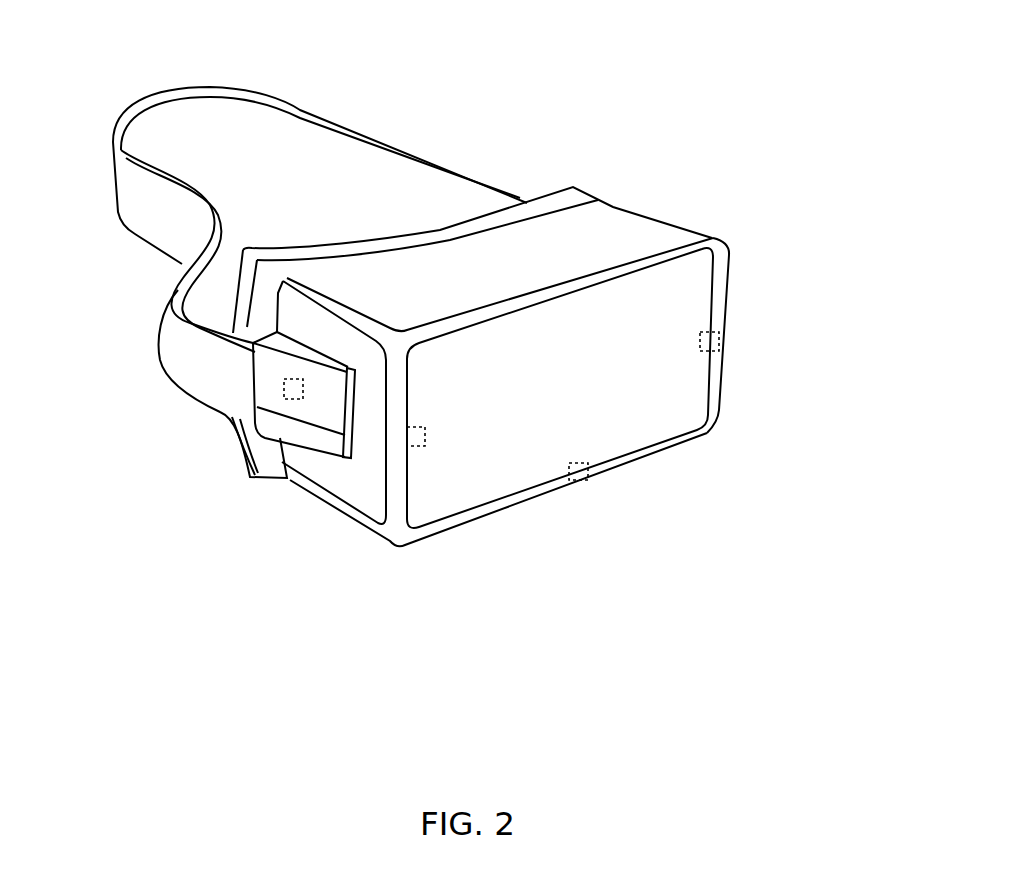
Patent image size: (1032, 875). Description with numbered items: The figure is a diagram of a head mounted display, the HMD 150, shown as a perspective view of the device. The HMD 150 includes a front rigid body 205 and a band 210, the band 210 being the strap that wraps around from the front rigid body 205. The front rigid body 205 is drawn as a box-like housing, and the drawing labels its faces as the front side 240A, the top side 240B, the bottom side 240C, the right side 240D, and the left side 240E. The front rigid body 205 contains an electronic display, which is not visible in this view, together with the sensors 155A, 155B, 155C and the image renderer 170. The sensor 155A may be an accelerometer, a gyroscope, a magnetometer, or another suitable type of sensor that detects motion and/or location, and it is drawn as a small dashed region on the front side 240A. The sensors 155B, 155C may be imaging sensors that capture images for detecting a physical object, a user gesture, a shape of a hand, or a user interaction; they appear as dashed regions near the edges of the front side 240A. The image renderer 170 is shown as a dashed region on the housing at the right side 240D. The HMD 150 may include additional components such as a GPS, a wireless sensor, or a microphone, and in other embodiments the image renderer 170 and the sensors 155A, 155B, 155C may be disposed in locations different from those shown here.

The HMD 150 is at (80, 31).
The front rigid body 205 is at (723, 237).
The band 210 is at (428, 150).
The front side 240A is at (643, 428).
The top side 240B is at (345, 286).
The bottom side 240C is at (310, 528).
The right side 240D is at (357, 491).
The left side 240E is at (702, 218).
The sensor 155A is at (584, 495).
The sensor 155B is at (418, 463).
The sensor 155C is at (734, 358).
The image renderer 170 is at (269, 392).